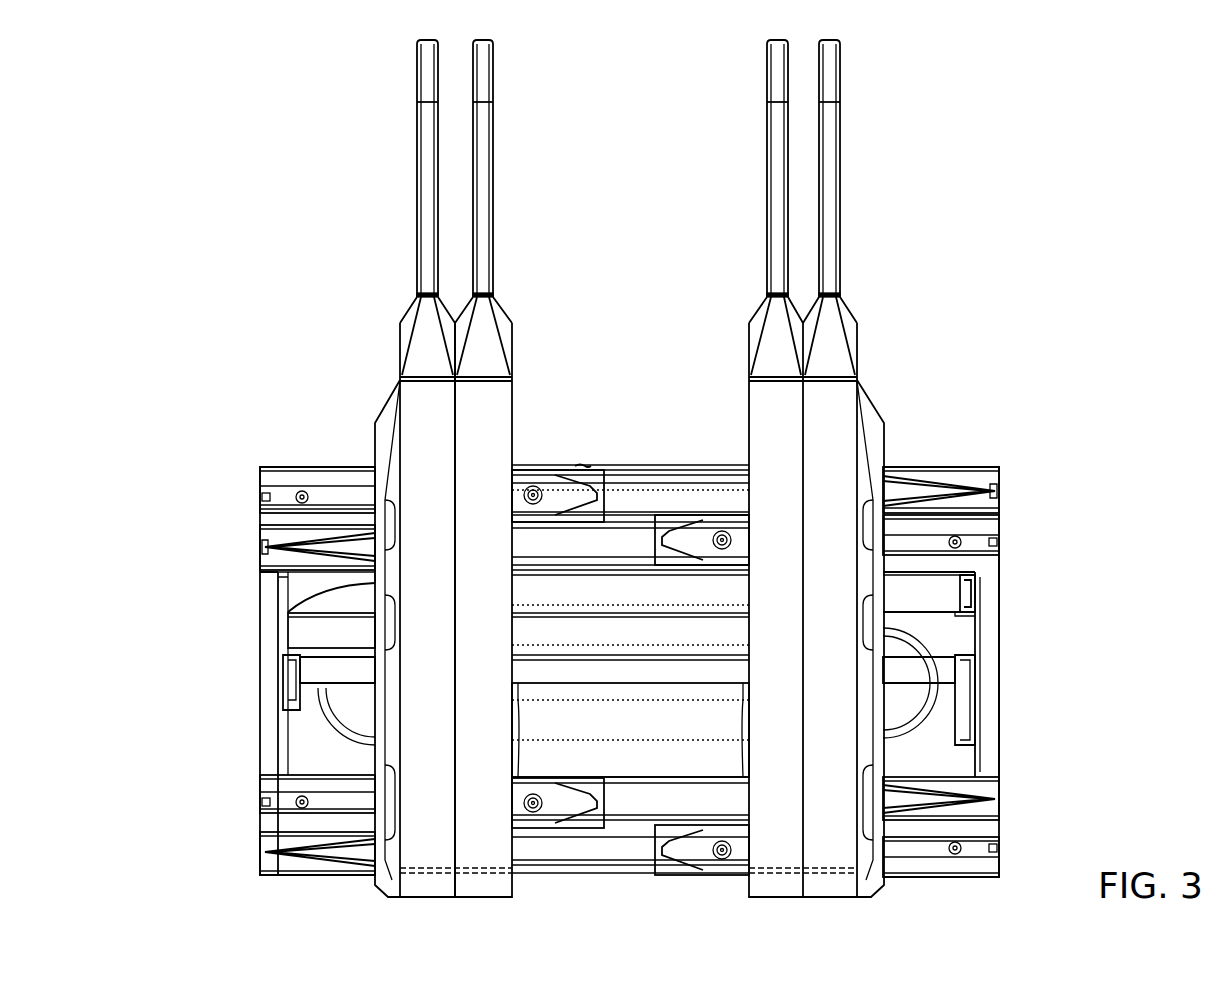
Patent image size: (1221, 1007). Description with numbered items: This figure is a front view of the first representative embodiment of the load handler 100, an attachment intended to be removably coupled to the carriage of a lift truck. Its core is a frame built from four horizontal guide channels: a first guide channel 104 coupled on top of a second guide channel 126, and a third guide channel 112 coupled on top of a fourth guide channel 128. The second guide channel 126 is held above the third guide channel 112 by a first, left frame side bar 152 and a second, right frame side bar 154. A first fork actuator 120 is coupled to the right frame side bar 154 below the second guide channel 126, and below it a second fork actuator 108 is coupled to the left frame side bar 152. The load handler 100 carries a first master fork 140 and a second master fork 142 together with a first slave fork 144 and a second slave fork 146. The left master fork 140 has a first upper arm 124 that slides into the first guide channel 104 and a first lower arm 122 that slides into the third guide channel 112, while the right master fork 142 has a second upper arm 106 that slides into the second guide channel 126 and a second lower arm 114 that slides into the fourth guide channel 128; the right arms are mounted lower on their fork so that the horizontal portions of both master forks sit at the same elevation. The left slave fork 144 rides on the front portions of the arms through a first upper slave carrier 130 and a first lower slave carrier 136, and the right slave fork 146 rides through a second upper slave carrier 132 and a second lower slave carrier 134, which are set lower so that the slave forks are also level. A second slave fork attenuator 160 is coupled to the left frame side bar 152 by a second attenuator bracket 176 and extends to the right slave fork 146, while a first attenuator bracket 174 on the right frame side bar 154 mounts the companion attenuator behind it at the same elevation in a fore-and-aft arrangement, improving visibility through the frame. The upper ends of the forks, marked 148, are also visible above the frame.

The load handler 100 is at (232, 110).
The first guide channel 104 is at (338, 492).
The second upper arm 106 is at (335, 545).
The second fork actuator 108 is at (318, 623).
The third guide channel 112 is at (330, 805).
The second lower arm 114 is at (330, 848).
The first fork actuator 120 is at (945, 596).
The first lower arm 122 is at (975, 800).
The first upper arm 124 is at (968, 497).
The second guide channel 126 is at (975, 543).
The fourth guide channel 128 is at (985, 850).
The first upper slave carrier 130 is at (565, 492).
The second upper slave carrier 132 is at (700, 520).
The second lower slave carrier 134 is at (680, 840).
The first lower slave carrier 136 is at (548, 810).
The first master fork 140 is at (425, 412).
The second master fork 142 is at (835, 395).
The first slave fork 144 is at (475, 407).
The second slave fork 146 is at (770, 395).
The gripper rod 148 is at (830, 330).
The first frame side bar 152 is at (262, 660).
The second frame side bar 154 is at (990, 637).
The second slave fork attenuator 160 is at (672, 670).
The first attenuator bracket 174 is at (970, 690).
The second attenuator bracket 176 is at (290, 690).